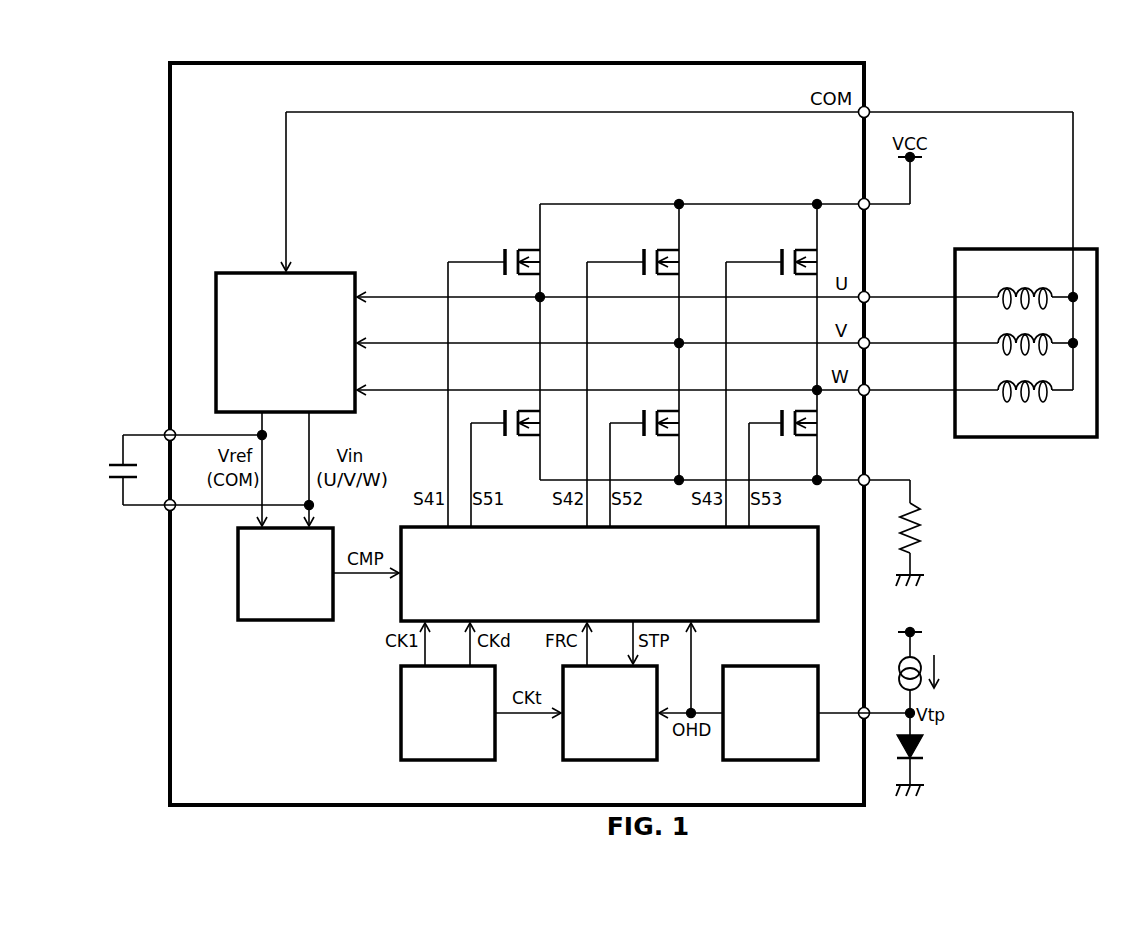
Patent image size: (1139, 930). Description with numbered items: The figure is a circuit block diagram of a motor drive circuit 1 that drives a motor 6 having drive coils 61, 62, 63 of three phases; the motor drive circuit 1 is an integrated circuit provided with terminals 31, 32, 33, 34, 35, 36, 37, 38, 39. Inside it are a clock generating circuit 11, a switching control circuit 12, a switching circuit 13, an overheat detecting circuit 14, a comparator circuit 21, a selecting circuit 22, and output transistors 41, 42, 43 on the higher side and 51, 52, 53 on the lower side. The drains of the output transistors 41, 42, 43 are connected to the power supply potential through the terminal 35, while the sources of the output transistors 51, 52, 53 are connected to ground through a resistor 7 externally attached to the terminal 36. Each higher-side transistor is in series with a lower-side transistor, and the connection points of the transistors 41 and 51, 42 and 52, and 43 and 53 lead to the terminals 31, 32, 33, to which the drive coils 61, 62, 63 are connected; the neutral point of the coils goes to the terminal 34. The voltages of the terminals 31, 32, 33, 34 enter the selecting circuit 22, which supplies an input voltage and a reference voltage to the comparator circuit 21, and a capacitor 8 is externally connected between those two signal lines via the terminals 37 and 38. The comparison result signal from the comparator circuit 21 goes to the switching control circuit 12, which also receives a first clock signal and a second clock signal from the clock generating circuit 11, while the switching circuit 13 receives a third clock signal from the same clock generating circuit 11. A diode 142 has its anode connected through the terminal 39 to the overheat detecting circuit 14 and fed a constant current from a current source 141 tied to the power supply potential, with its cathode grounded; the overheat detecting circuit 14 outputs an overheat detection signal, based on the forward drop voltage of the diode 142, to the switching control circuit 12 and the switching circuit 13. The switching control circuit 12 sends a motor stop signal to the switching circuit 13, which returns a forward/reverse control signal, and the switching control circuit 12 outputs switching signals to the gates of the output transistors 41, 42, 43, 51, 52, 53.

The motor drive circuit 1 is at (520, 63).
The motor 6 is at (1026, 290).
The resistor 7 is at (920, 536).
The capacitor 8 is at (118, 463).
The clock generating circuit 11 is at (450, 762).
The switching control circuit 12 is at (782, 526).
The switching circuit 13 is at (612, 762).
The overheat detecting circuit 14 is at (773, 762).
The comparator circuit 21 is at (288, 622).
The selecting circuit 22 is at (322, 272).
The terminal 31 is at (868, 295).
The terminal 32 is at (868, 341).
The terminal 33 is at (868, 388).
The terminal 34 is at (868, 110).
The terminal 35 is at (868, 202).
The terminal 36 is at (868, 478).
The terminal 37 is at (167, 433).
The terminal 38 is at (167, 508).
The terminal 39 is at (868, 711).
The output transistor 41 is at (526, 250).
The output transistor 42 is at (665, 250).
The output transistor 43 is at (803, 250).
The output transistor 51 is at (526, 436).
The output transistor 52 is at (665, 436).
The output transistor 53 is at (804, 436).
The drive coil 61 is at (1003, 288).
The drive coil 62 is at (1003, 334).
The drive coil 63 is at (1003, 381).
The current source 141 is at (922, 665).
The diode 142 is at (923, 740).